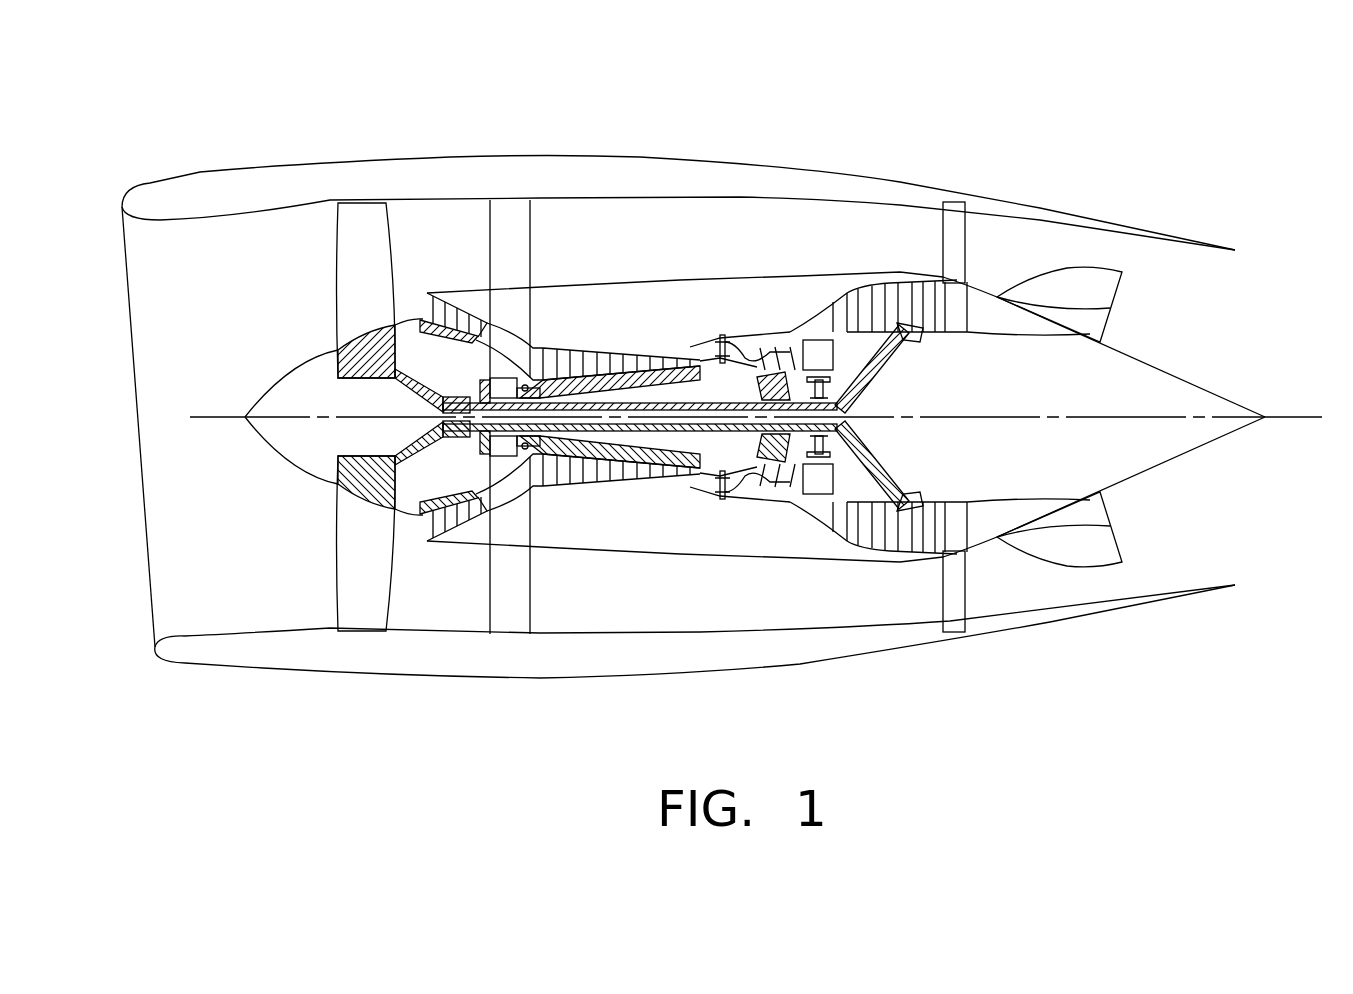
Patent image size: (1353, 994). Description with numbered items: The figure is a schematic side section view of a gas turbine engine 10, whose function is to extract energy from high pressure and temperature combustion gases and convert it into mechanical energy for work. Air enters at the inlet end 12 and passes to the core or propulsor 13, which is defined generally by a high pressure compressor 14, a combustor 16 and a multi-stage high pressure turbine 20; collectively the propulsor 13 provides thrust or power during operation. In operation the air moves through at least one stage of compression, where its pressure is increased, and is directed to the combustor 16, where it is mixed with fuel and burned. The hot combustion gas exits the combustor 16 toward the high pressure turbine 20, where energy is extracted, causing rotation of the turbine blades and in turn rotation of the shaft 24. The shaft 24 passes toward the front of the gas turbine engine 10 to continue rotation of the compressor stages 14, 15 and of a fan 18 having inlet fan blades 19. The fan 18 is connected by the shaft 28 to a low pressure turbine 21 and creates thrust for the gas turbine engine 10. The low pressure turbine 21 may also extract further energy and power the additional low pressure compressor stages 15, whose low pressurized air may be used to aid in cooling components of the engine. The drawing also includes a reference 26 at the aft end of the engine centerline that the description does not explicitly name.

The gas turbine engine 10 is at (986, 131).
The inlet end 12 is at (143, 250).
The propulsor 13 is at (684, 281).
The high pressure compressor 14 is at (573, 349).
The low pressure compressor 15 is at (470, 300).
The combustor 16 is at (742, 333).
The fan 18 is at (310, 273).
The inlet fan blades 19 is at (352, 543).
The high pressure turbine 20 is at (792, 329).
The low pressure turbine 21 is at (913, 347).
The shaft 24 is at (718, 468).
The exhaust / centerline axis 26 is at (1322, 417).
The shaft 28 is at (624, 432).